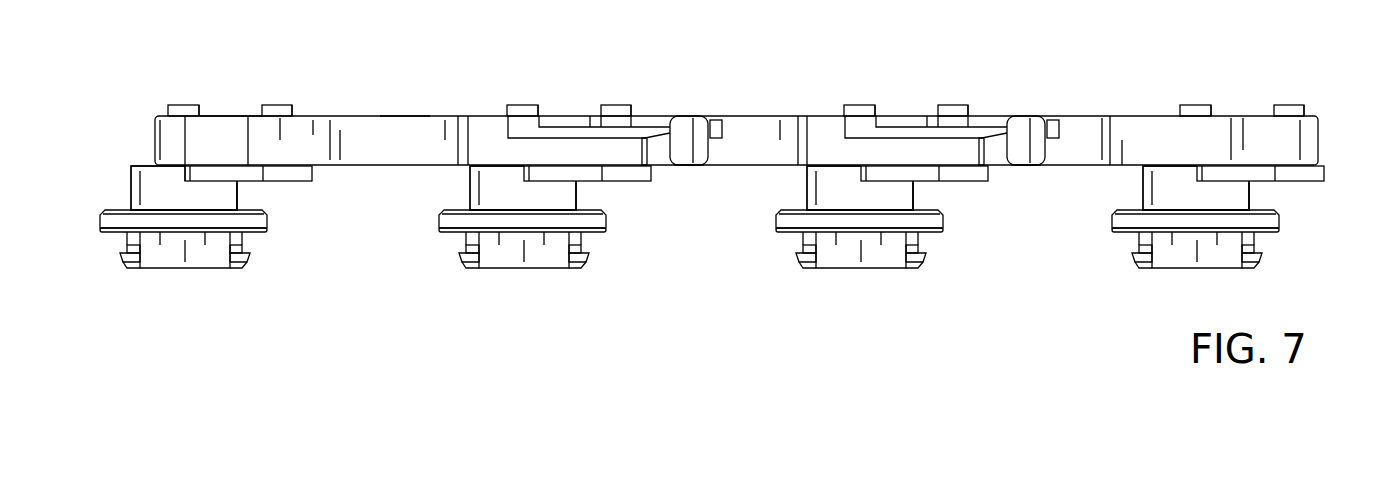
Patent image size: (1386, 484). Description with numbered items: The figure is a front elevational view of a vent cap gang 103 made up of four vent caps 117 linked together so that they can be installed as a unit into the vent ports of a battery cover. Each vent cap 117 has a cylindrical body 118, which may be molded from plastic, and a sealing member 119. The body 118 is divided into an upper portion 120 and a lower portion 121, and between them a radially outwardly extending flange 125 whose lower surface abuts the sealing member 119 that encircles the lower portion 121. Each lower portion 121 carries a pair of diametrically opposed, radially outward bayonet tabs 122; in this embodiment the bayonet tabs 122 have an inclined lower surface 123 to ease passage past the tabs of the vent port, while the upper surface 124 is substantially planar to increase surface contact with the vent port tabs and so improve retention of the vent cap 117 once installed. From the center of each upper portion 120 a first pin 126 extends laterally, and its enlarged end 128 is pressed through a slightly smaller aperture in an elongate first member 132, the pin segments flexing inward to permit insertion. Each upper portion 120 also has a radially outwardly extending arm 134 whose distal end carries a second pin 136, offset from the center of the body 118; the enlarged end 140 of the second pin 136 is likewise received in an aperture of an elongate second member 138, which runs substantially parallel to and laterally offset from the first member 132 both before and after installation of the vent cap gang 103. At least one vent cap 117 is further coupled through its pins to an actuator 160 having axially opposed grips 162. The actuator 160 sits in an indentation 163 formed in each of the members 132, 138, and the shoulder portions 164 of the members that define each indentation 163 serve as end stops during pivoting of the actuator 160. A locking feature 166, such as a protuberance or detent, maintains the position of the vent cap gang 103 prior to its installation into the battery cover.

The vent cap gang 103 is at (358, 108).
The vent cap 117 is at (137, 153).
The cylindrical body 118 is at (131, 170).
The sealing member 119 is at (100, 231).
The upper portion 120 is at (237, 196).
The lower portion 121 is at (242, 240).
The bayonet tab 122 is at (284, 283).
The inclined lower surface 123 is at (276, 305).
The substantially planar upper surface 124 is at (296, 262).
The flange 125 is at (100, 220).
The first pin 126 is at (172, 105).
The enlarged end 128 is at (198, 108).
The first member 132 is at (238, 113).
The arm 134 is at (312, 175).
The second pin 136 is at (265, 105).
The second member 138 is at (405, 113).
The enlarged end 140 is at (291, 108).
The actuator 160 is at (860, 100).
The grip 162 is at (862, 195).
The indentation 163 is at (757, 86).
The shoulder portion 164 is at (792, 114).
The locking feature 166 is at (776, 152).